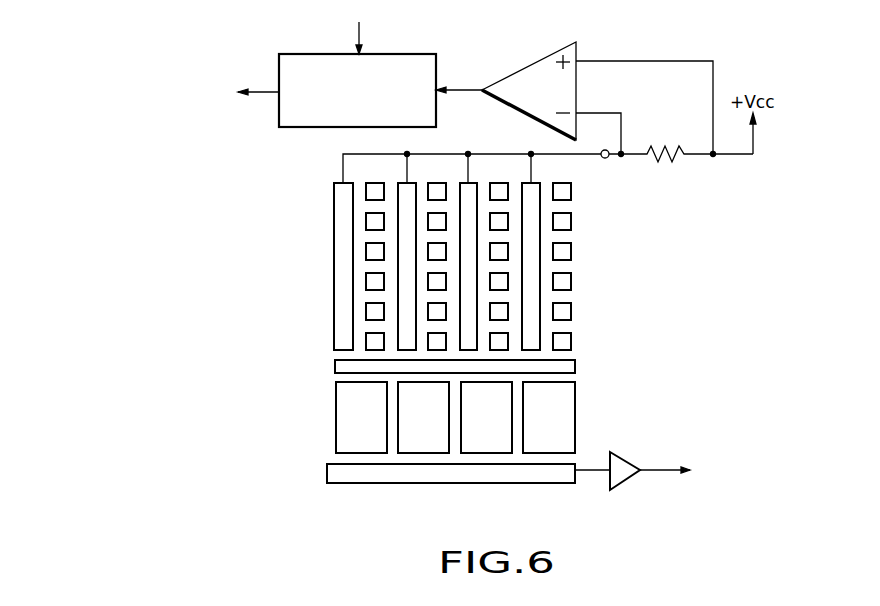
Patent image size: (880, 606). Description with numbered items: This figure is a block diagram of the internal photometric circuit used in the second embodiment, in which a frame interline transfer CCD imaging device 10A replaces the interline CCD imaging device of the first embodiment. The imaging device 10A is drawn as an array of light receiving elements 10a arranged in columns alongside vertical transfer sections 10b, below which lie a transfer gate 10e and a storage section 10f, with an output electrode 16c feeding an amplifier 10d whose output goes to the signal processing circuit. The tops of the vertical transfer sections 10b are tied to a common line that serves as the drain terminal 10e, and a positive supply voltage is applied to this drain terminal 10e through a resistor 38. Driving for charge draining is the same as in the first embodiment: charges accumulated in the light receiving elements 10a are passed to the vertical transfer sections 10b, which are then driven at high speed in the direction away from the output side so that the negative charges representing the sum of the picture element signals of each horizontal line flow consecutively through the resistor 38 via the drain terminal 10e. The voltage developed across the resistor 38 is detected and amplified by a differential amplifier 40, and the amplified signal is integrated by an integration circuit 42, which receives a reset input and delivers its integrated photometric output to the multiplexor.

The integration circuit 42 is at (413, 54).
The differential amplifier 40 is at (522, 63).
The resistor 38 is at (668, 146).
The drain terminal 10e is at (608, 158).
The frame interline transfer CCD imaging device 10A is at (481, 266).
The light receiving elements 10a is at (365, 221).
The vertical transfer sections 10b is at (540, 326).
The storage section 10f is at (336, 416).
The output electrode 16c is at (505, 484).
The amplifier 10d is at (626, 458).